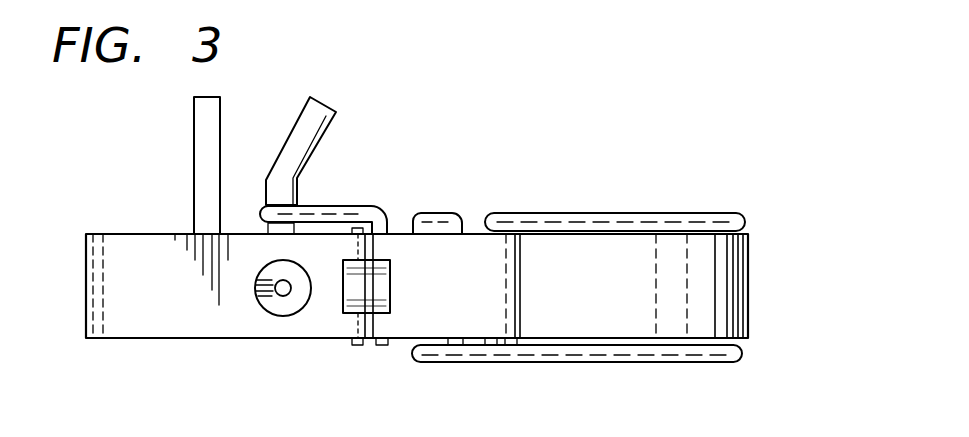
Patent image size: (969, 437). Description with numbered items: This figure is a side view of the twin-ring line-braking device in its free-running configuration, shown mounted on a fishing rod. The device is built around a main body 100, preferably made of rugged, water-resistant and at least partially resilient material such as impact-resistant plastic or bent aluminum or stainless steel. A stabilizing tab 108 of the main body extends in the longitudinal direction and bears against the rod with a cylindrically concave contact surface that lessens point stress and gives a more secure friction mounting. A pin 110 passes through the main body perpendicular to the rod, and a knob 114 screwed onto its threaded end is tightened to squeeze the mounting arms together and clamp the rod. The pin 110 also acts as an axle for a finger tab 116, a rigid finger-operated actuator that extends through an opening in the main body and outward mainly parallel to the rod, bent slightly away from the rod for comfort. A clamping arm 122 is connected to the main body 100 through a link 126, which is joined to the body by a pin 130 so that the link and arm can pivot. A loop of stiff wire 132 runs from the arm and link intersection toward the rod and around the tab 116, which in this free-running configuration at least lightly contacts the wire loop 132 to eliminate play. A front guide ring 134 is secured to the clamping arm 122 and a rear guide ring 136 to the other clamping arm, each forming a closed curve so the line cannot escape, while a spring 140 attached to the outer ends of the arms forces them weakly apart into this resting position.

The main body 100 is at (118, 310).
The stabilizing member or tab 108 is at (195, 165).
The pin 110 is at (275, 292).
The knob 114 is at (280, 308).
The finger tab or lever 116 is at (325, 135).
The clamping arm 122 is at (477, 338).
The link or link portion 126 is at (355, 288).
The pin 130 is at (357, 212).
The loop of stiff wire 132 is at (390, 212).
The front guide ring 134 is at (583, 212).
The rear guide ring 136 is at (645, 350).
The spring 140 is at (748, 303).